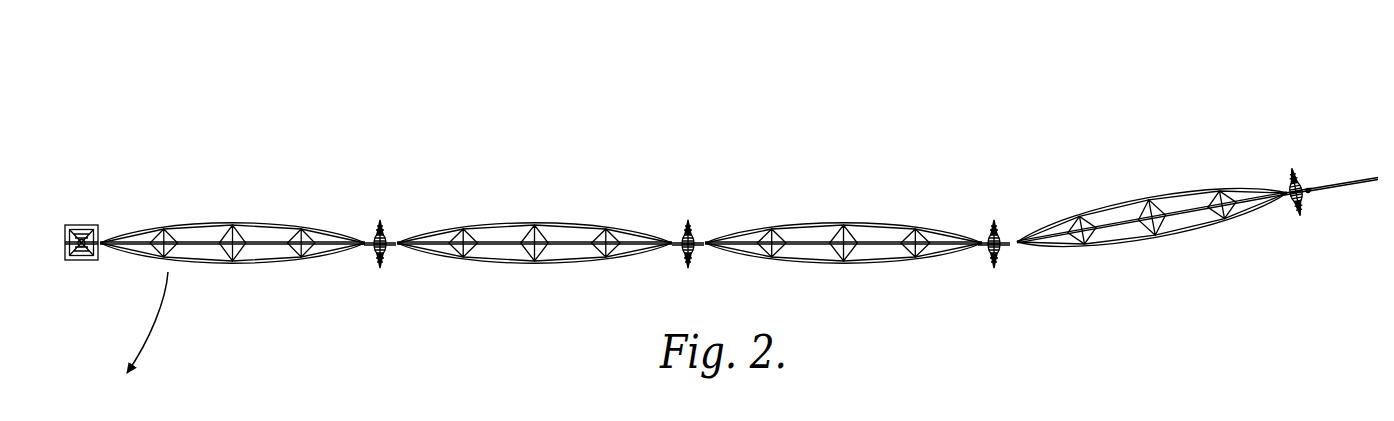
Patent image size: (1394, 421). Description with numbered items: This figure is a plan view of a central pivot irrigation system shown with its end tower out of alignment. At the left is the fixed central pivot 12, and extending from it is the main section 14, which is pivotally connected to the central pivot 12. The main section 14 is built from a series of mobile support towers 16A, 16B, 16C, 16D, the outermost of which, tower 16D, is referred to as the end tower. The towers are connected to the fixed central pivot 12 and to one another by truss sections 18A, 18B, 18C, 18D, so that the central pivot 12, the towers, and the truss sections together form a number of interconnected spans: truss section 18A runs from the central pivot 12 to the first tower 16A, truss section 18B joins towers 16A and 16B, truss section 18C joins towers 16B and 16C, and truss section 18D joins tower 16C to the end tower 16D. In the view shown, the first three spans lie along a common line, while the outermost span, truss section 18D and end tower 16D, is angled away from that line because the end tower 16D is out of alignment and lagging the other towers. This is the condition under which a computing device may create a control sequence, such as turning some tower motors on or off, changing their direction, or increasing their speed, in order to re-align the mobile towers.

The fixed central pivot 12 is at (77, 227).
The main section 14 is at (708, 103).
The mobile support tower 16A is at (390, 212).
The mobile support tower 16B is at (700, 213).
The mobile support tower 16C is at (1002, 205).
The end tower 16D is at (1301, 157).
The truss section 18A is at (233, 212).
The truss section 18B is at (538, 215).
The truss section 18C is at (847, 215).
The truss section 18D is at (1152, 190).